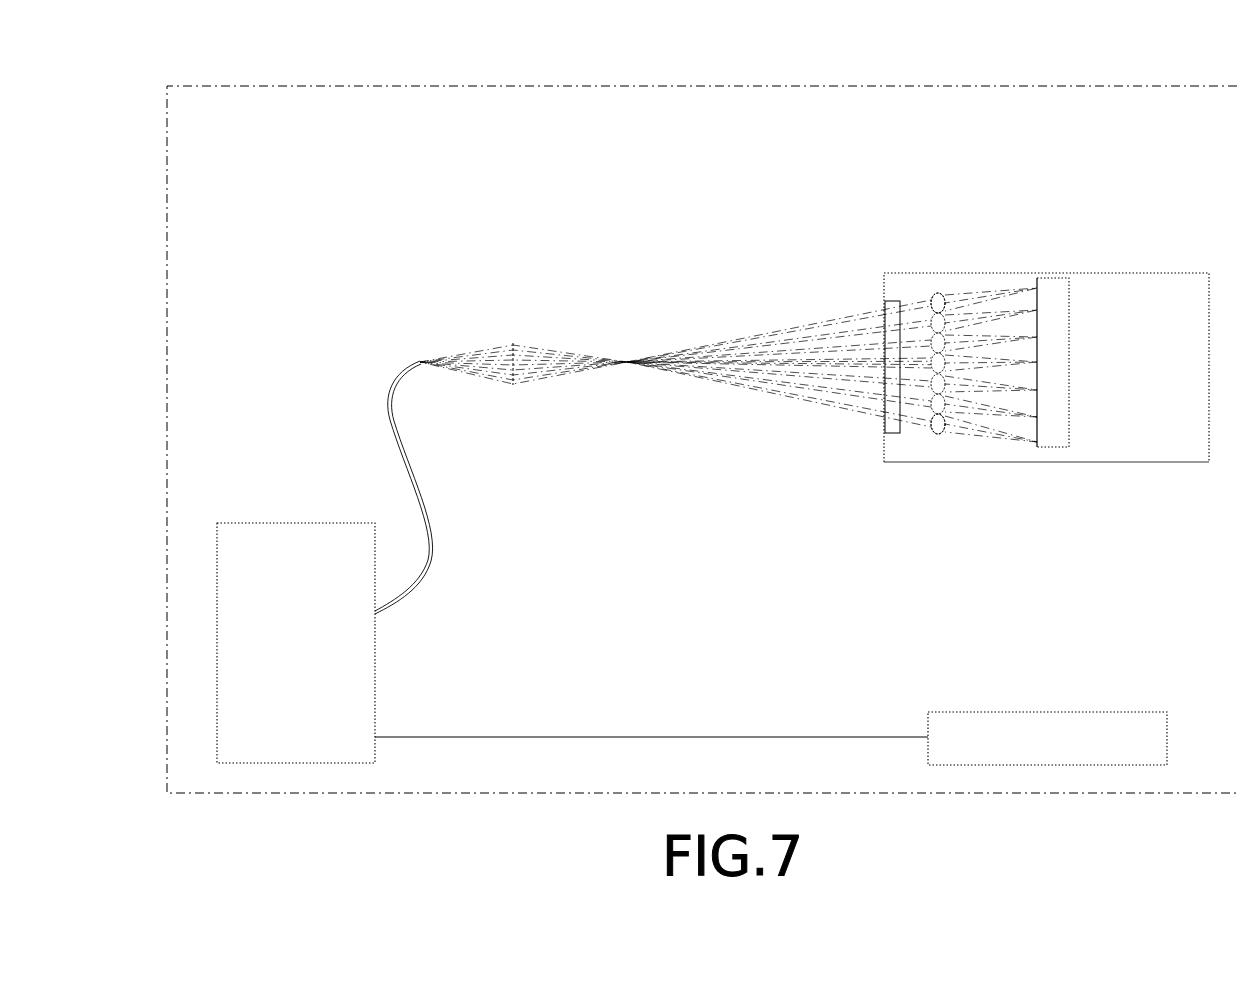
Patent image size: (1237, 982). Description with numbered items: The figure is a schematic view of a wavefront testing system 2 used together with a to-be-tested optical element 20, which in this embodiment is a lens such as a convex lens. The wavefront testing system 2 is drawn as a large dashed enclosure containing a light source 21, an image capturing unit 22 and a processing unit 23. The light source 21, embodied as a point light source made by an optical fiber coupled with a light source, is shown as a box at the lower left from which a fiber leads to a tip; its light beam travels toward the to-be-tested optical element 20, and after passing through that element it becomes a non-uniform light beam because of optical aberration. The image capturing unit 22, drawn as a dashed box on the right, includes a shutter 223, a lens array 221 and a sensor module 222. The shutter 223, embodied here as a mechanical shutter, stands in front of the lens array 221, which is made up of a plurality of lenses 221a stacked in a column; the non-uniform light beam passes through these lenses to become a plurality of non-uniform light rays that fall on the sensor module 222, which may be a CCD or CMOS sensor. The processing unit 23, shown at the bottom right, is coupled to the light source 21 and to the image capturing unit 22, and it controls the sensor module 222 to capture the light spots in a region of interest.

The wavefront testing system 2 is at (712, 86).
The to-be-tested optical element 20 is at (513, 343).
The light source 21 is at (296, 523).
The image capturing unit 22 is at (988, 273).
The lens array 221 is at (936, 434).
The lens 221a is at (934, 293).
The sensor module 222 is at (1068, 278).
The shutter 223 is at (889, 300).
The processing unit 23 is at (928, 716).